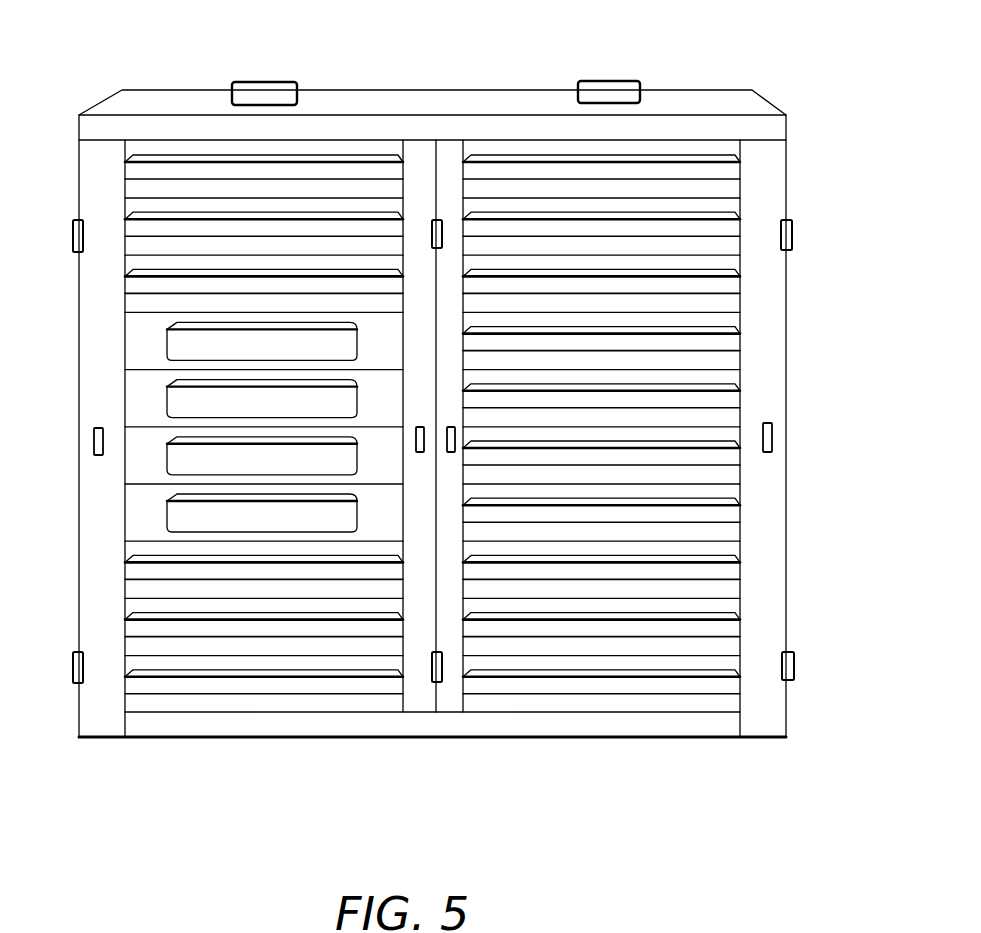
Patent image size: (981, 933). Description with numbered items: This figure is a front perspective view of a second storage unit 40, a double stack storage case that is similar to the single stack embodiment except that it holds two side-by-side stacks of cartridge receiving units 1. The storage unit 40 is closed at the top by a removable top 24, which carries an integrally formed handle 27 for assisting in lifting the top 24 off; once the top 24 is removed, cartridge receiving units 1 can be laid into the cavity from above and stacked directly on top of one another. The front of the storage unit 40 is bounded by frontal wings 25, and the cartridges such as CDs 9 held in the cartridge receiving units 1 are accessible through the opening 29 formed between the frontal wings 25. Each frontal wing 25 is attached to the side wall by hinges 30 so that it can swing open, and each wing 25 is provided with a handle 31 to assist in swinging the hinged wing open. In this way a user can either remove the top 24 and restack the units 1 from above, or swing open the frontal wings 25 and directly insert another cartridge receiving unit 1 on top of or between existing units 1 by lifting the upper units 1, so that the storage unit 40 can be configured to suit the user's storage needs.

The cartridge receiving unit 1 is at (654, 424).
The CD 9 is at (730, 515).
The removable top 24 is at (738, 105).
The frontal wings 25 is at (767, 182).
The handle 27 is at (272, 93).
The opening 29 is at (623, 703).
The hinges 30 is at (438, 218).
The handles 31 is at (97, 457).
The second storage unit 40 is at (807, 490).